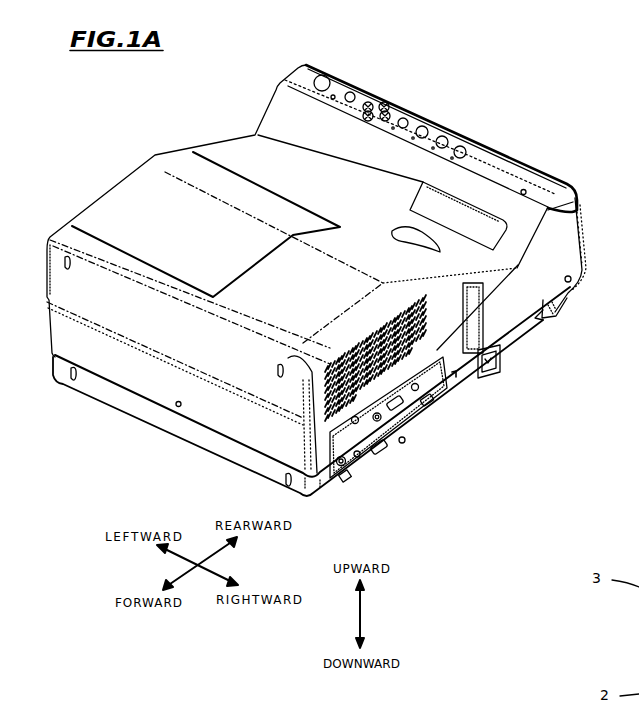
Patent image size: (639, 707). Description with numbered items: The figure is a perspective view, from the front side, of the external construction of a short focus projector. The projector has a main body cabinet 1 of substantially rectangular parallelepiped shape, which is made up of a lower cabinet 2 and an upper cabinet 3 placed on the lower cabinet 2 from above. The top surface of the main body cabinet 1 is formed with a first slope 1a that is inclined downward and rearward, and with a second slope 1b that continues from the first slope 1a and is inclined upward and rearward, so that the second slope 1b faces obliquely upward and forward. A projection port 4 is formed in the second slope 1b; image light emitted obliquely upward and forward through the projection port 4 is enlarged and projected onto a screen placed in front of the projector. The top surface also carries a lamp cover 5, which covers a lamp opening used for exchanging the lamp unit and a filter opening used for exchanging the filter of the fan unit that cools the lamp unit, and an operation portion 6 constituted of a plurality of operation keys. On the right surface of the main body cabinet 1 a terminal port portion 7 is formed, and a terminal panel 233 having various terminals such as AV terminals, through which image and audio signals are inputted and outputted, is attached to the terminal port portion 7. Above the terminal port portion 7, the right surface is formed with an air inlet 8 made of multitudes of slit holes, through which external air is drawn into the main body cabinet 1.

The main body cabinet 1 is at (523, 157).
The first slope 1a is at (240, 160).
The second slope 1b is at (283, 122).
The lower cabinet 2 is at (567, 303).
The upper cabinet 3 is at (582, 222).
The projection port 4 is at (436, 213).
The lamp cover 5 is at (131, 205).
The operation portion 6 is at (418, 125).
The terminal port portion 7 is at (370, 467).
The air inlet 8 is at (385, 338).
The terminal panel 233 is at (388, 420).